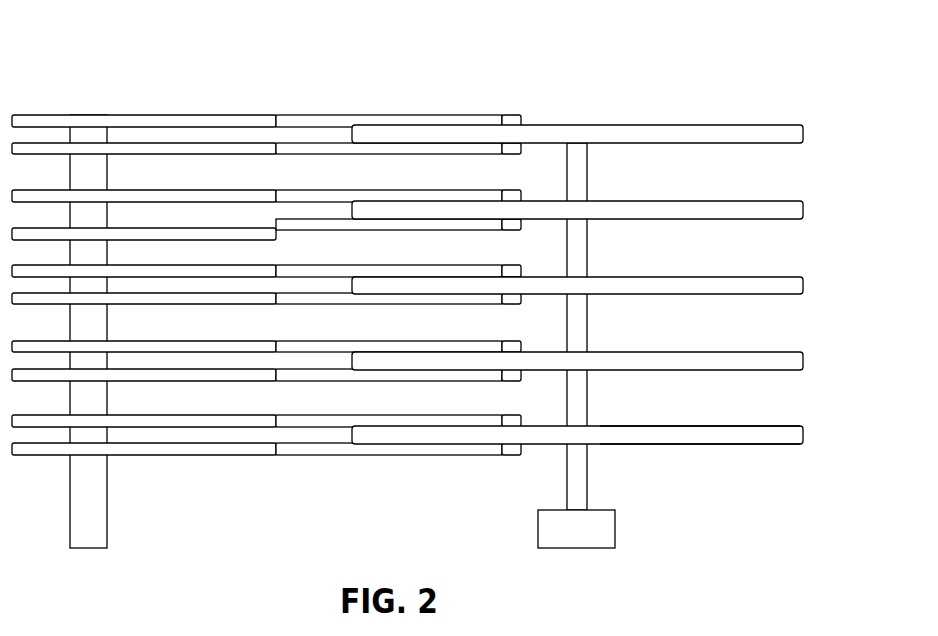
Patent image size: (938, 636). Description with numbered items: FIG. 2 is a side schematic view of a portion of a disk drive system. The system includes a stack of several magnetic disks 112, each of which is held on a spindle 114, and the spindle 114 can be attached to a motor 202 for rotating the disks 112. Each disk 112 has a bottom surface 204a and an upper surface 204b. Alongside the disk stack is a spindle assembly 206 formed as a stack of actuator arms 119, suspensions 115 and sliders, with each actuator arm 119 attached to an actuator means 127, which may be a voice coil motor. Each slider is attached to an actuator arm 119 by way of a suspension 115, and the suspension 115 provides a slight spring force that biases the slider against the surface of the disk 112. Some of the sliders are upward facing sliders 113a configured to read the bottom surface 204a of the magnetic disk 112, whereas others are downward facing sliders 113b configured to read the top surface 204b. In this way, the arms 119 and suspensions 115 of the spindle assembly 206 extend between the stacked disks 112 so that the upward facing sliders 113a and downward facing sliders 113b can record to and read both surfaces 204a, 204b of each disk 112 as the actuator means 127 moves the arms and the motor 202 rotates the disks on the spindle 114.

The spindle assembly 206 is at (131, 106).
The actuator means 127 is at (107, 523).
The spindle 114 is at (587, 170).
The actuator arm 119 is at (244, 427).
The suspension 115 is at (313, 415).
The upward facing slider 113a is at (513, 456).
The downward facing slider 113b is at (512, 415).
The magnetic disk 112 is at (805, 437).
The bottom surface 204a is at (697, 444).
The upper surface 204b is at (688, 426).
The motor 202 is at (538, 526).